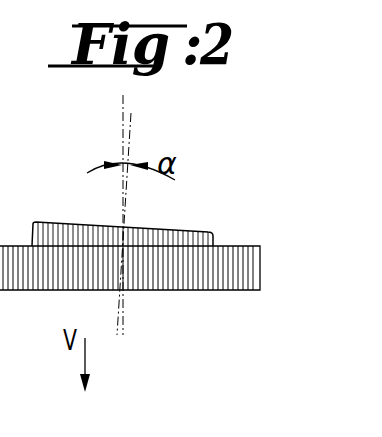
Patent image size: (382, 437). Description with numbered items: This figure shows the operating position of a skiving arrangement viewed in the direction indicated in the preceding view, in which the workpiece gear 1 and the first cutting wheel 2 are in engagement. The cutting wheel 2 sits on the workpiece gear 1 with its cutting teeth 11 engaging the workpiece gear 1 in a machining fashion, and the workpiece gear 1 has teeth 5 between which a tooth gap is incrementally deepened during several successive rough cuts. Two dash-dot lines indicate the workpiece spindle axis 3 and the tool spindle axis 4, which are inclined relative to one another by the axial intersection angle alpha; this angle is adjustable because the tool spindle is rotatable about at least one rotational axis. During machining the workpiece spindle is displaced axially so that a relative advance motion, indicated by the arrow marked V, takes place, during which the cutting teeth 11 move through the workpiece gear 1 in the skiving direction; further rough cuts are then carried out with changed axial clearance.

The workpiece gear 1 is at (237, 247).
The first cutting wheel 2 is at (171, 231).
The workpiece spindle axis 3 is at (121, 156).
The tool spindle axis 4 is at (133, 142).
The teeth 5 is at (148, 267).
The cutting teeth 11 is at (73, 237).